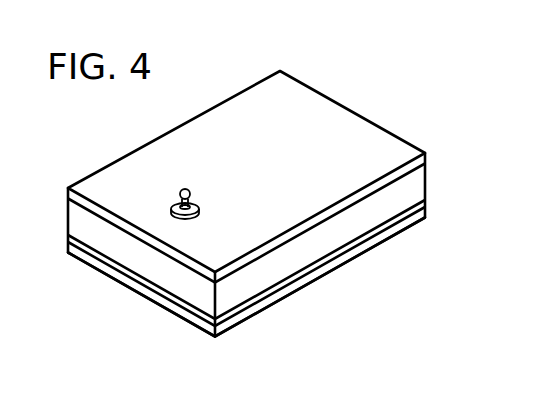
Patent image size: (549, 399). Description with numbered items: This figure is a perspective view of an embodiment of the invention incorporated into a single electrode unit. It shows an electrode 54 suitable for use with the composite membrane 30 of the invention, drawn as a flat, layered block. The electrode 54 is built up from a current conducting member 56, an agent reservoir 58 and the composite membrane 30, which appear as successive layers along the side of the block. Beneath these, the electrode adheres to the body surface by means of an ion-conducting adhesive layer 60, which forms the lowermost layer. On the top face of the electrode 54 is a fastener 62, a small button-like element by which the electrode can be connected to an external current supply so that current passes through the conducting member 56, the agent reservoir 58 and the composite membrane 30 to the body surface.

The electrode 54 is at (382, 90).
The current conducting member 56 is at (425, 154).
The agent reservoir 58 is at (422, 181).
The composite membrane 30 is at (422, 202).
The ion-conducting adhesive layer 60 is at (402, 225).
The fastener 62 is at (181, 191).